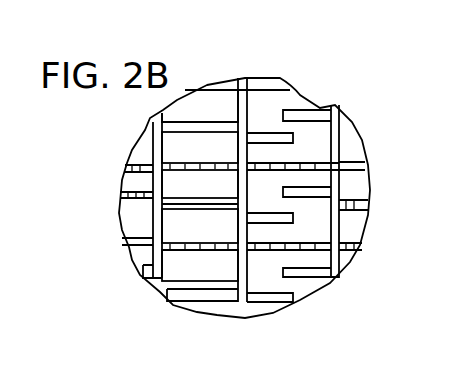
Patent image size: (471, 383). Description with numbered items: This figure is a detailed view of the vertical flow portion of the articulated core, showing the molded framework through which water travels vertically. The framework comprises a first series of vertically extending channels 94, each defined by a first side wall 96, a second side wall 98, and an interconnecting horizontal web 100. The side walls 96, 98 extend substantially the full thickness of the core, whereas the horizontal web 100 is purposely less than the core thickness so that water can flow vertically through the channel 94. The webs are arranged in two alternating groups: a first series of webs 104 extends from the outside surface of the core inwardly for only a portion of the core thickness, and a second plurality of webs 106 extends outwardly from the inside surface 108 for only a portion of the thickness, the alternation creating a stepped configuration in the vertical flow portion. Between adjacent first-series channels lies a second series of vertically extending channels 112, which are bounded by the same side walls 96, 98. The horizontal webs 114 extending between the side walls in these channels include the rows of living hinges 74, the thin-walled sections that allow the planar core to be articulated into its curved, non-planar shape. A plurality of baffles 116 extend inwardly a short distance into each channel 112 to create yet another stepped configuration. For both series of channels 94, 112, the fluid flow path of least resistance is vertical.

The living hinge 74 is at (293, 238).
The vertically extending channel 94 is at (184, 99).
The first side wall 96 is at (154, 212).
The second side wall 98 is at (231, 266).
The horizontal web 100 is at (201, 122).
The first series of webs 104 is at (193, 256).
The second plurality of webs 106 is at (187, 190).
The inside surface 108 is at (340, 220).
The second series of vertically extending channels 112 is at (272, 283).
The horizontal web 114 is at (313, 252).
The baffle 116 is at (260, 133).